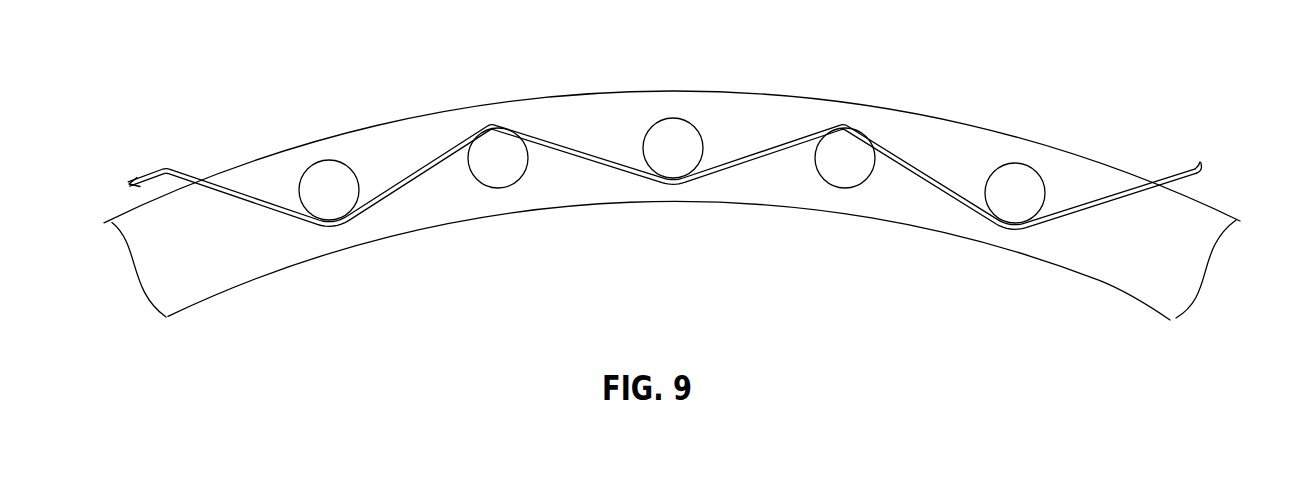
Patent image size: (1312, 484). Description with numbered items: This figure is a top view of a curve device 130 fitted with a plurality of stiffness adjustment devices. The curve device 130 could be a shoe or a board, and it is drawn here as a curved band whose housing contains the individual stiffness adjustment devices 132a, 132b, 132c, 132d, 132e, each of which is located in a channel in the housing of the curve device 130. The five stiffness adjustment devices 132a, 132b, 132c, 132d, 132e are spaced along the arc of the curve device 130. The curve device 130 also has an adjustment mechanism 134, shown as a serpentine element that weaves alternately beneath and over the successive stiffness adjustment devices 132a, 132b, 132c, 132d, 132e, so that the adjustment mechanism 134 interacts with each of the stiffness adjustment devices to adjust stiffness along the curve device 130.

The curve device 130 is at (1197, 217).
The stiffness adjustment device 132a is at (317, 177).
The stiffness adjustment device 132b is at (492, 143).
The stiffness adjustment device 132c is at (668, 135).
The stiffness adjustment device 132d is at (837, 148).
The stiffness adjustment device 132e is at (1017, 175).
The adjustment mechanism 134 is at (1175, 165).